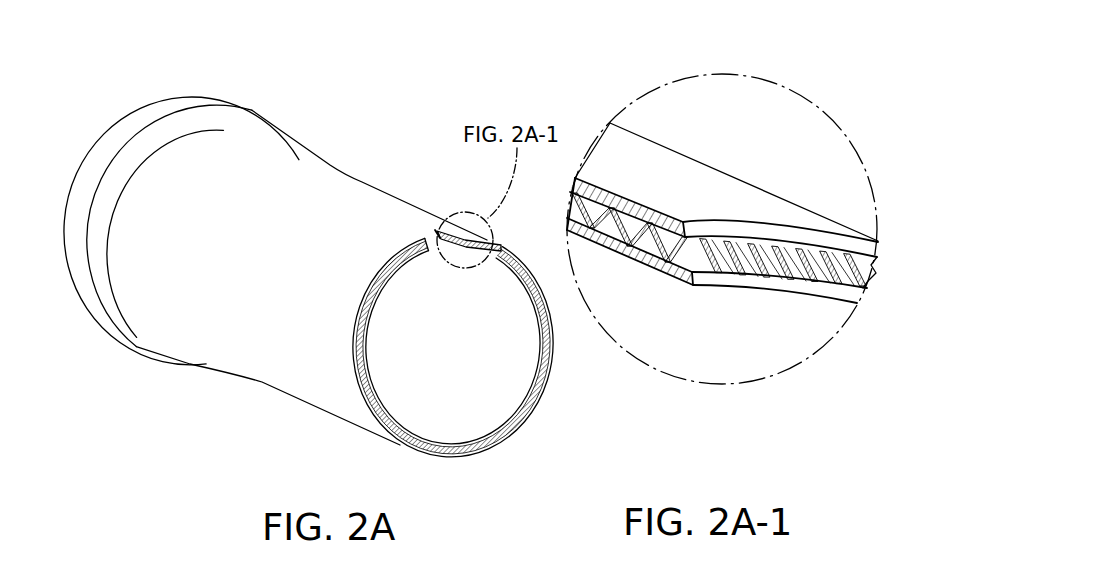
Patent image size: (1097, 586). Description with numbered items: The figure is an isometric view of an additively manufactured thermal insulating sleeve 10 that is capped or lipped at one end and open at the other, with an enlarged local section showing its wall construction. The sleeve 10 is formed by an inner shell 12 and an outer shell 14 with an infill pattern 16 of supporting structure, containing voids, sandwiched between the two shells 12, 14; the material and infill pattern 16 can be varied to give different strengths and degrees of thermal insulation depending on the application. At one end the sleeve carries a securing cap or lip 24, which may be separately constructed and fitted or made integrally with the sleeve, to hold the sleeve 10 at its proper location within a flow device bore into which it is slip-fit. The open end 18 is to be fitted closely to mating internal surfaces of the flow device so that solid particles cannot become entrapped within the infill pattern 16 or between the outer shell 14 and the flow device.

In FIG. 2A, the thermal insulating sleeve 10 is at (308, 237).
In FIG. 2A, the securing cap or lip 24 is at (250, 112).
In FIG. 2A-1, the inner shell 12 is at (740, 278).
In FIG. 2A-1, the outer shell 14 is at (687, 200).
In FIG. 2A-1, the infill pattern 16 is at (793, 268).
In FIG. 2A-1, the open end 18 is at (747, 246).